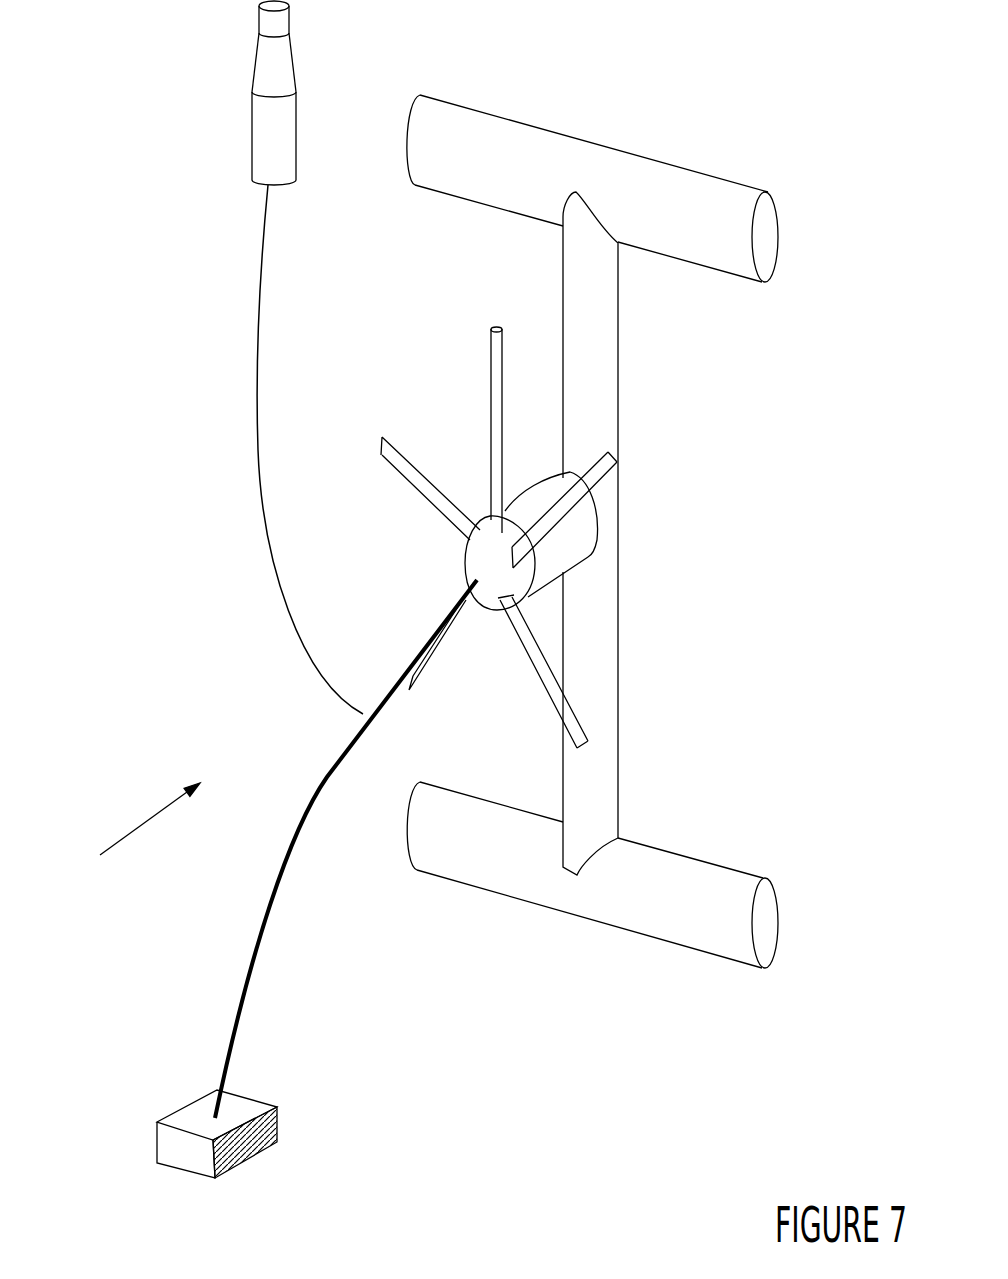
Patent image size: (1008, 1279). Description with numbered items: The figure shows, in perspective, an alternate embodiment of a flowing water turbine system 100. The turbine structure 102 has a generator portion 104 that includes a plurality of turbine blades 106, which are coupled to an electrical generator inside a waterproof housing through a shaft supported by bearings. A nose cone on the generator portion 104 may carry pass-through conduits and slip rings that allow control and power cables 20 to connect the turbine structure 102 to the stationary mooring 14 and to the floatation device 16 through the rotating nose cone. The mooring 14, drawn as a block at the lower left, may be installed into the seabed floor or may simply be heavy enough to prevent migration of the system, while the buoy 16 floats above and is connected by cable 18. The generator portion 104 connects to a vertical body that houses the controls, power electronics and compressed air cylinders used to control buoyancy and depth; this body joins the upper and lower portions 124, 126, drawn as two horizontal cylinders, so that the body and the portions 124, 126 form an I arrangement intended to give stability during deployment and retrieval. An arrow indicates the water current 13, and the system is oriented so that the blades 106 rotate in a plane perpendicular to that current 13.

The flowing water turbine system 100 is at (159, 277).
The water current 13 is at (145, 823).
The mooring 14 is at (280, 1103).
The floatation device 16 is at (252, 100).
The cable 18 is at (253, 414).
The control and power cable 20 is at (265, 927).
The turbine structure 102 is at (656, 597).
The generator portion 104 is at (545, 478).
The turbine blades 106 is at (430, 673).
The upper portion 124 is at (665, 168).
The lower portion 126 is at (650, 933).